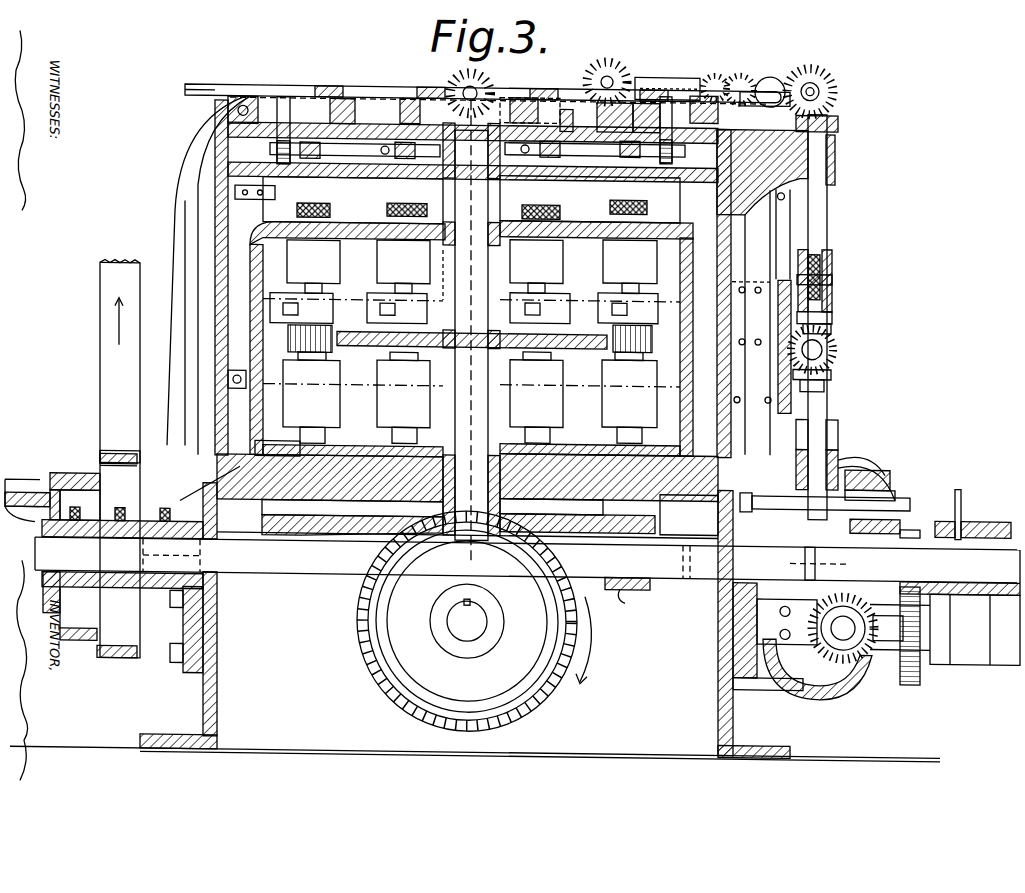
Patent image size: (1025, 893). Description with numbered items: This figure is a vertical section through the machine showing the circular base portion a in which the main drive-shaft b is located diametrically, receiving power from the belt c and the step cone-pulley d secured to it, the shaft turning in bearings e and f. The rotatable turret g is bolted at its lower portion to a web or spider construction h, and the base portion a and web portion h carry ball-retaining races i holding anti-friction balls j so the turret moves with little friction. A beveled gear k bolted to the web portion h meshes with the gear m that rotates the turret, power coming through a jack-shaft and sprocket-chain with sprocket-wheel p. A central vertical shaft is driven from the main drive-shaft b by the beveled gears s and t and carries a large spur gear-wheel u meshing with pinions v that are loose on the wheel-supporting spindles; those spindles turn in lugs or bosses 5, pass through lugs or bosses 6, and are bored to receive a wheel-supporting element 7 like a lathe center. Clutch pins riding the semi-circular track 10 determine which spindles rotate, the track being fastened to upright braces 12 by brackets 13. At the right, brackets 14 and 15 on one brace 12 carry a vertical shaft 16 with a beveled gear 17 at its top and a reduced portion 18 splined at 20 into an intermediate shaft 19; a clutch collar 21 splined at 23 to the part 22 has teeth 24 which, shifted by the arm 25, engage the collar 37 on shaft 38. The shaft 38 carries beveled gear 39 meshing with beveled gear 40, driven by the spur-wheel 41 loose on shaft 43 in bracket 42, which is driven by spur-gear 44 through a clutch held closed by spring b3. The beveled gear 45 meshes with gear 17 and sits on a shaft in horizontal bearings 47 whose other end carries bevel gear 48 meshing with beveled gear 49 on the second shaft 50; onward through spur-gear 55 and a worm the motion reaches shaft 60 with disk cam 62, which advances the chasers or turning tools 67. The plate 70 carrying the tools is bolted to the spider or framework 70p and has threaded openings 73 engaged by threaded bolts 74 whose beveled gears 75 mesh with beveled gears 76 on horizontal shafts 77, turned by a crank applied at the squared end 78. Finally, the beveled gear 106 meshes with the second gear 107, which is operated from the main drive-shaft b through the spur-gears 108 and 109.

The lugs or bosses 5 is at (378, 416).
The lugs or bosses 6 is at (380, 263).
The wheel-supporting element 7 is at (455, 300).
The semi-circular track 10 is at (270, 305).
The upright braces 12 is at (188, 264).
The brackets 13 is at (228, 382).
The bracket 14 is at (836, 147).
The bracket 15 is at (838, 443).
The vertical shaft 16 is at (826, 227).
The beveled gear 17 is at (838, 115).
The reduced portion 18 is at (832, 250).
The intermediate shaft 19 is at (832, 307).
The spline 20 is at (832, 275).
The clutch collar 21 is at (831, 325).
The part 22 is at (833, 345).
The spline 23 is at (850, 341).
The teeth 24 is at (835, 360).
The arm 25 is at (785, 336).
The collar 37 is at (822, 365).
The shaft 38 is at (840, 425).
The beveled gear 39 is at (877, 449).
The second beveled gear 40 is at (892, 466).
The spur-wheel 41 is at (895, 489).
The bracket 42 is at (900, 452).
The shaft 43 is at (785, 496).
The spur-gear 44 is at (880, 539).
The beveled gear 45 is at (825, 75).
The horizontal bearings 47 is at (770, 76).
The bevel gear 48 is at (743, 68).
The beveled gear 49 is at (715, 75).
The second shaft 50 is at (690, 67).
The spur-gear 55 is at (616, 70).
The shaft 60 is at (215, 164).
The disk cam 62 is at (473, 119).
The chasers or turning tools 67 is at (280, 213).
The plate 70 is at (600, 181).
The spider or framework 70p is at (530, 112).
The threaded openings 73 is at (235, 196).
The threaded bolts 74 is at (215, 184).
The beveled gears 75 is at (285, 98).
The beveled gears 76 is at (330, 100).
The horizontally arranged shafts 77 is at (275, 98).
The squared end 78 is at (225, 98).
The beveled gear 106 is at (830, 686).
The second gear 107 is at (875, 645).
The spur-gear 108 is at (912, 679).
The spur-gear 109 is at (945, 610).
The circular base portion a is at (218, 703).
The main drive-shaft b is at (325, 579).
The spring b3 is at (826, 565).
The belt c is at (105, 393).
The step cone-pulley d is at (100, 462).
The bearing e is at (170, 600).
The bearing f is at (718, 602).
The rotatable turret g is at (230, 333).
The web or spider construction h is at (262, 511).
The ball-retaining races i is at (215, 474).
The anti-friction balls j is at (262, 473).
The beveled gear k is at (278, 540).
The gear m is at (548, 691).
The sprocket-wheel p is at (962, 513).
The beveled gear s is at (627, 600).
The beveled gear t is at (360, 542).
The large spur gear-wheel u is at (372, 349).
The pinions v is at (288, 345).